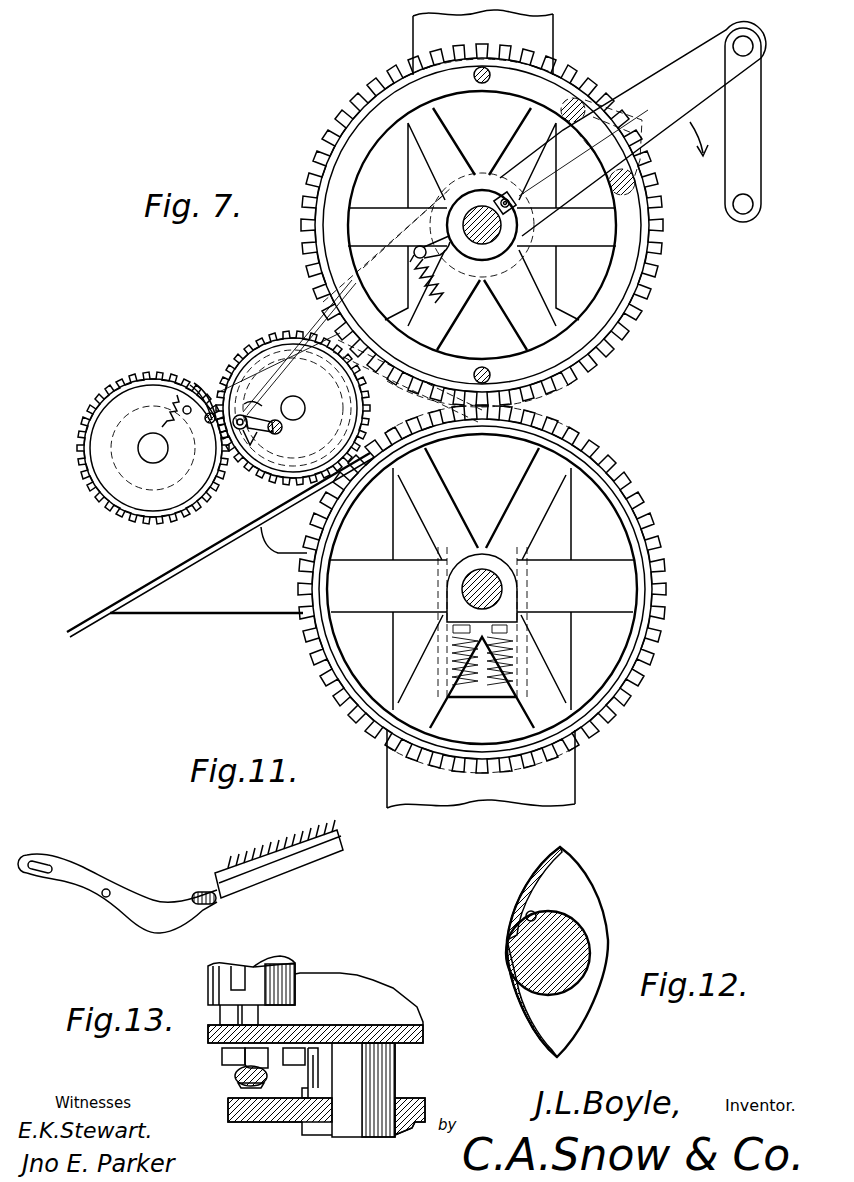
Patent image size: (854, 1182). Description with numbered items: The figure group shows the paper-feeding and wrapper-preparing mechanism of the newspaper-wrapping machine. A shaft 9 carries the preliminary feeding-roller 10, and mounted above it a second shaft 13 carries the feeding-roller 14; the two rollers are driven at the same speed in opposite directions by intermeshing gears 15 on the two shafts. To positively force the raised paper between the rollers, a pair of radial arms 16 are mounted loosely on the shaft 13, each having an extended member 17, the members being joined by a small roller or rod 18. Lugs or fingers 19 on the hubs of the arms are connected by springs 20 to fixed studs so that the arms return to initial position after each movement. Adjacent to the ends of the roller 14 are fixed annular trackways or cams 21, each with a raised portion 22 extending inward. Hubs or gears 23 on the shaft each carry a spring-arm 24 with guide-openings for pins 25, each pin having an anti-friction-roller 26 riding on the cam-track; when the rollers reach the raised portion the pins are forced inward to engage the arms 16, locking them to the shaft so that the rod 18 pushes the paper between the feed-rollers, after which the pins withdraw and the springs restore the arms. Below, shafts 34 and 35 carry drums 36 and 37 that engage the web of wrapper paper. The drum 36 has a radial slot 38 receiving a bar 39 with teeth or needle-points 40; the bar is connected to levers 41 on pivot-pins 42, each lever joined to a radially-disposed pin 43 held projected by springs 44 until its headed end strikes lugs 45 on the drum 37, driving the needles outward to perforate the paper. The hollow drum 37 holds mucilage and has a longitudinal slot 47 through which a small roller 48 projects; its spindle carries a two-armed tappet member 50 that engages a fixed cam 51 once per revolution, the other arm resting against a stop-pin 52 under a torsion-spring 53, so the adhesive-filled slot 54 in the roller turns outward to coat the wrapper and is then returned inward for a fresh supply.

In FIG. 7, the shaft 9 is at (477, 567).
In FIG. 7, the preliminary feeding-roller 10 is at (633, 512).
In FIG. 7, the second shaft 13 is at (482, 207).
In FIG. 7, the feeding-roller 14 is at (650, 314).
In FIG. 7, the intermeshing gears 15 is at (665, 255).
In FIG. 7, the radial arms 16 is at (690, 70).
In FIG. 7, the extended member 17 is at (752, 124).
In FIG. 7, the small roller or rod 18 is at (752, 208).
In FIG. 7, the lugs or fingers 19 is at (437, 240).
In FIG. 7, the springs 20 is at (420, 288).
In FIG. 7, the annular trackways or cams 21 is at (358, 143).
In FIG. 7, the raised portion 22 is at (630, 217).
In FIG. 7, the hubs or gears 23 is at (462, 208).
In FIG. 7, the spring-arm 24 is at (571, 162).
In FIG. 7, the pins 25 is at (598, 117).
In FIG. 7, the anti-friction-roller 26 is at (582, 100).
In FIG. 7, the shaft 34 is at (150, 450).
In FIG. 7, the shaft 35 is at (297, 408).
In FIG. 13, the shaft 35 is at (355, 1137).
In FIG. 7, the drum or roller 36 is at (130, 502).
In FIG. 7, the drum or roller 37 is at (272, 467).
In FIG. 12, the drum or roller 37 is at (583, 877).
In FIG. 13, the drum or roller 37 is at (352, 987).
In FIG. 7, the radially-disposed slot 38 is at (207, 400).
In FIG. 11, the bar 39 is at (257, 880).
In FIG. 11, the teeth or needle-points 40 is at (365, 812).
In FIG. 7, the levers 41 is at (202, 427).
In FIG. 11, the levers 41 is at (148, 905).
In FIG. 7, the pivot-pins 42 is at (188, 414).
In FIG. 7, the radially-disposed pin 43 is at (187, 378).
In FIG. 7, the springs 44 is at (163, 407).
In FIG. 7, the lugs 45 is at (243, 368).
In FIG. 12, the longitudinally-disposed slot 47 is at (507, 943).
In FIG. 13, the longitudinally-disposed slot 47 is at (208, 1005).
In FIG. 12, the small roller 48 is at (573, 938).
In FIG. 13, the small roller 48 is at (280, 956).
In FIG. 7, the two-armed tappet member 50 is at (247, 412).
In FIG. 13, the two-armed tappet member 50 is at (293, 1055).
In FIG. 7, the fixed cam or tappet 51 is at (280, 436).
In FIG. 13, the fixed cam or tappet 51 is at (307, 1070).
In FIG. 7, the stop-pin 52 is at (255, 392).
In FIG. 13, the stop-pin 52 is at (222, 1056).
In FIG. 7, the torsion-spring 53 is at (247, 428).
In FIG. 13, the torsion-spring 53 is at (270, 1060).
In FIG. 12, the slot 54 is at (533, 911).
In FIG. 13, the slot 54 is at (240, 963).